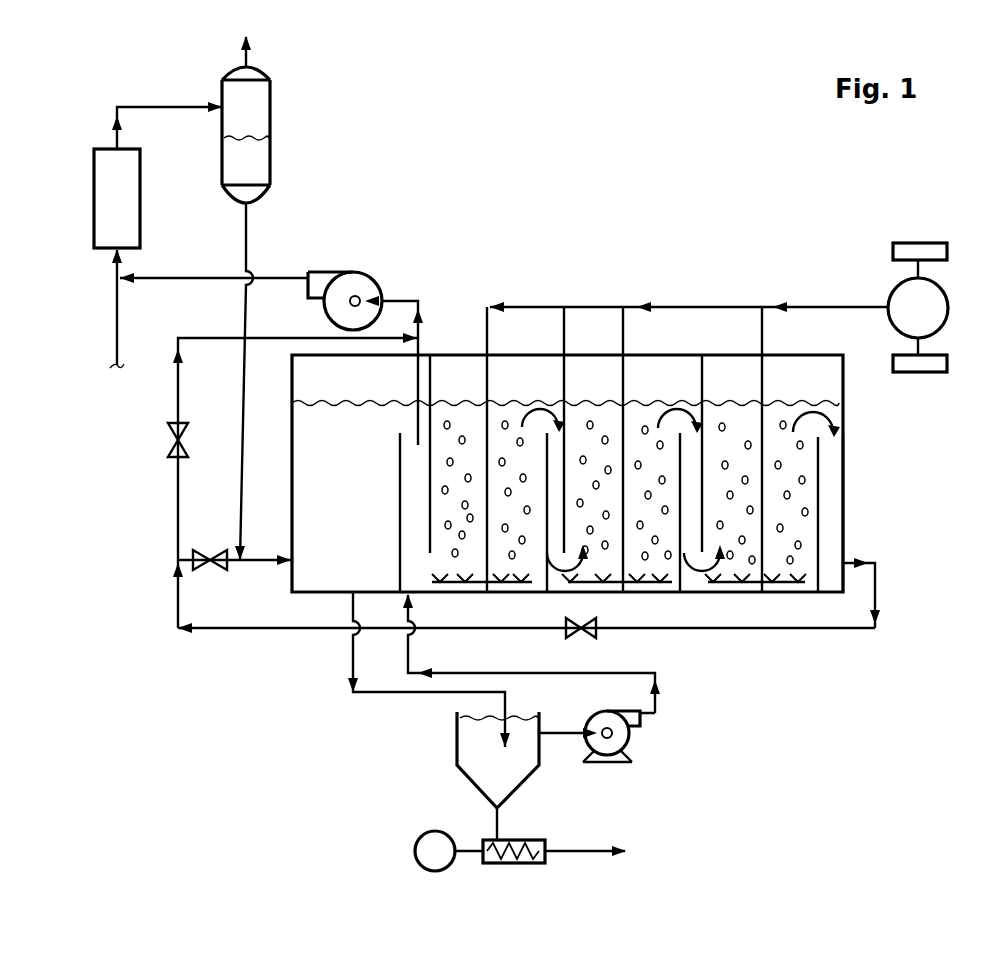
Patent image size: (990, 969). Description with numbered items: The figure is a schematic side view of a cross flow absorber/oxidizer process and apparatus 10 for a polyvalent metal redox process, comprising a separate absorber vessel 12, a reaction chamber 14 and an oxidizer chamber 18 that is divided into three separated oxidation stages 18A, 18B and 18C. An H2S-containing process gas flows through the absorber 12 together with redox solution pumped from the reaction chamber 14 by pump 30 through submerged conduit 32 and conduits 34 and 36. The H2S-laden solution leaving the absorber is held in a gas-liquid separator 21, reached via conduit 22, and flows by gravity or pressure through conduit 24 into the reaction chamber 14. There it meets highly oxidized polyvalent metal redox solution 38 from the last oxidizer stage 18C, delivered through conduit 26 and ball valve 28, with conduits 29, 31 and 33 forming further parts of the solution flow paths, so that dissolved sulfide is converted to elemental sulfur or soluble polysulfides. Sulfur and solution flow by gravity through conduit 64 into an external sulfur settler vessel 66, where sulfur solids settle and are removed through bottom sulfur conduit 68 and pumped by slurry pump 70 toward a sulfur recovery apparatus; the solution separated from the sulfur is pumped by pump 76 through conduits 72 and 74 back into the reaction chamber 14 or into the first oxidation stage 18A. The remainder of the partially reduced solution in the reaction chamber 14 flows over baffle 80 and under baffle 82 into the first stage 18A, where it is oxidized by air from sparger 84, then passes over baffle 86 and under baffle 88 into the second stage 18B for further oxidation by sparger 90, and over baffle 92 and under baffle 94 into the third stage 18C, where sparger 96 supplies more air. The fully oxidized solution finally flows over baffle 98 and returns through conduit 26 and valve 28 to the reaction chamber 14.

The cross flow absorber/oxidizer process and apparatus 10 is at (702, 283).
The absorber vessel 12 is at (93, 206).
The reaction chamber 14 is at (292, 426).
The oxidizer chamber 18 is at (610, 333).
The first oxidation stage 18A is at (450, 364).
The second oxidation stage 18B is at (590, 366).
The third oxidation stage 18C is at (738, 366).
The gas-liquid separator 21 is at (270, 110).
The conduit 22 is at (167, 106).
The conduit 24 is at (246, 228).
The conduit 26 is at (650, 630).
The ball valve 28 is at (581, 631).
The conduit 29 is at (176, 605).
The pump 30 is at (350, 272).
The conduit 31 is at (258, 562).
The submerged conduit 32 is at (423, 331).
The conduit 33 is at (400, 300).
The conduit 34 is at (201, 279).
The conduit 36 is at (117, 270).
The highly oxidized polyvalent metal redox solution 38 is at (793, 451).
The conduit 64 is at (350, 655).
The sulfur settler vessel 66 is at (458, 741).
The bottom sulfur conduit 68 is at (497, 821).
The slurry pump 70 is at (530, 840).
The conduit 72 is at (570, 733).
The conduit 74 is at (637, 669).
The pump 76 is at (633, 746).
The baffle 80 is at (400, 451).
The baffle 82 is at (427, 367).
The sparger 84 is at (490, 593).
The baffle 86 is at (547, 446).
The baffle 88 is at (564, 396).
The sparger 90 is at (650, 589).
The baffle 92 is at (678, 441).
The baffle 94 is at (703, 377).
The sparger 96 is at (790, 593).
The baffle 98 is at (820, 496).